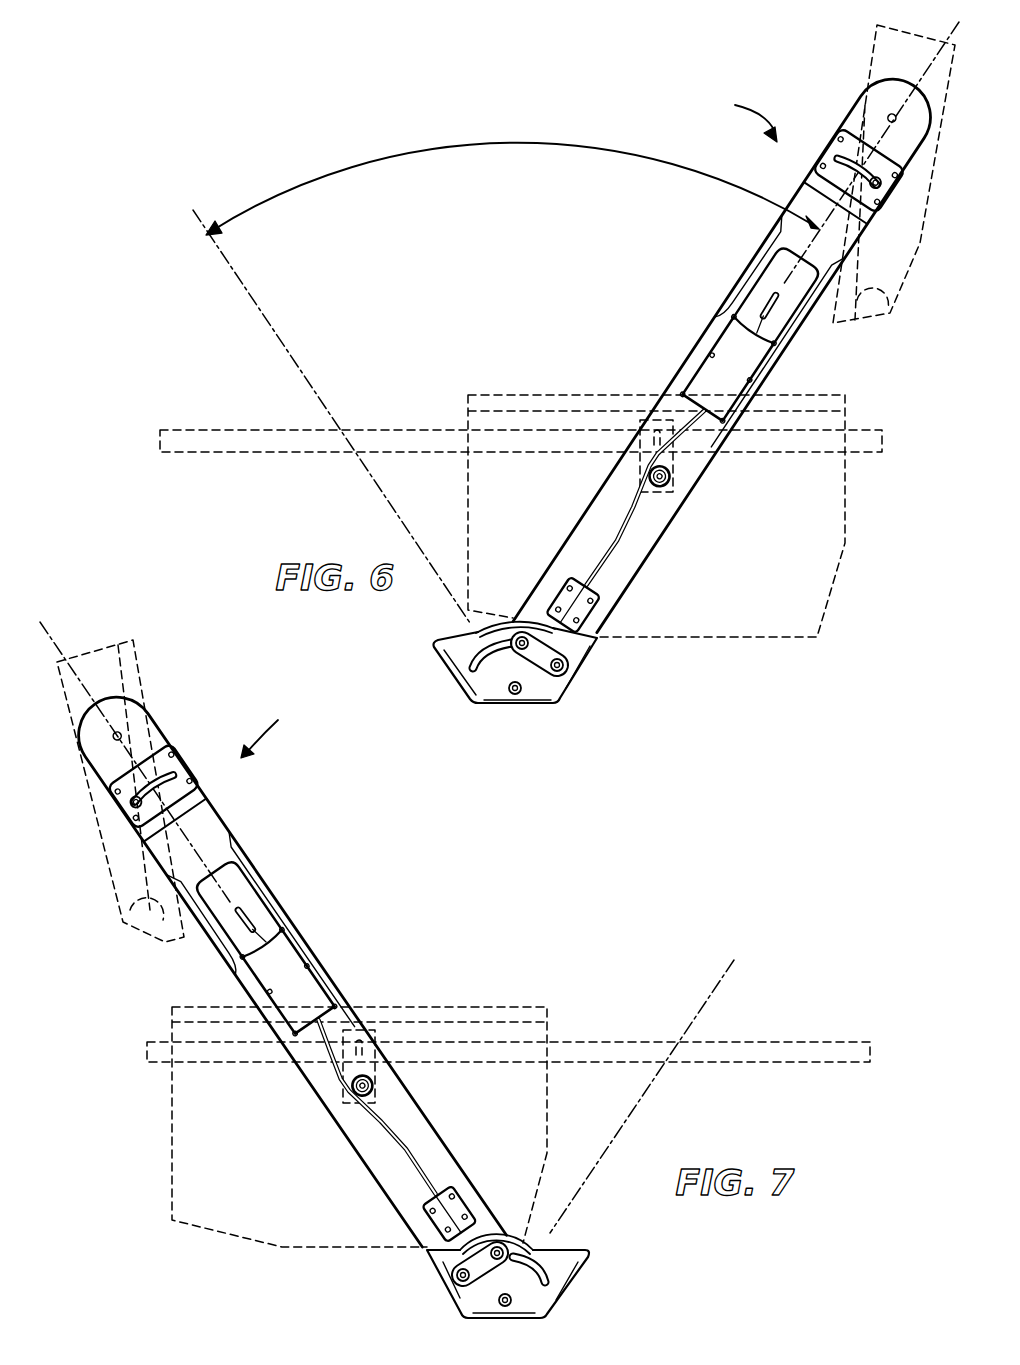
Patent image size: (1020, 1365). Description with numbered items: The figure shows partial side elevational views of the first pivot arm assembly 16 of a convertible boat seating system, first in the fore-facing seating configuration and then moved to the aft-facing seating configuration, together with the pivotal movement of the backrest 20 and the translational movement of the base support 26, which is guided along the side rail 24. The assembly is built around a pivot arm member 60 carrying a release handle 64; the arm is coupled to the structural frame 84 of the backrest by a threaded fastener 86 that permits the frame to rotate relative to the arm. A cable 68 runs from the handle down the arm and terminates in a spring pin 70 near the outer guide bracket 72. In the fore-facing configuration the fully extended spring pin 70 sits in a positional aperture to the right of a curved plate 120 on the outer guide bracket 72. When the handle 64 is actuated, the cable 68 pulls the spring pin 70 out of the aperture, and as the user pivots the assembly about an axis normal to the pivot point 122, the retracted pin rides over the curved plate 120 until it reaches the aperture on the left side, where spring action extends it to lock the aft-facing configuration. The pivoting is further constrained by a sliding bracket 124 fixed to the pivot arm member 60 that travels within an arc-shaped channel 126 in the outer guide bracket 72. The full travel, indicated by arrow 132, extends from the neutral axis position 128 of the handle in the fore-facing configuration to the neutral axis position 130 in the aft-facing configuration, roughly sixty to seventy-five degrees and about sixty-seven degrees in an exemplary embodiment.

In FIG. 6, the first pivot arm assembly 16 is at (740, 112).
In FIG. 7, the first pivot arm assembly 16 is at (274, 729).
In FIG. 6, the backrest 20 is at (920, 243).
In FIG. 7, the backrest 20 is at (98, 862).
In FIG. 6, the side rail 24 is at (248, 455).
In FIG. 7, the side rail 24 is at (790, 1064).
In FIG. 6, the base support 26 is at (848, 503).
In FIG. 7, the base support 26 is at (172, 1118).
In FIG. 6, the pivot arm member 60 is at (697, 347).
In FIG. 7, the pivot arm member 60 is at (331, 966).
In FIG. 6, the release handle 64 is at (774, 306).
In FIG. 7, the release handle 64 is at (250, 913).
In FIG. 6, the cable 68 is at (620, 540).
In FIG. 7, the cable 68 is at (390, 1148).
In FIG. 6, the spring pin 70 is at (555, 652).
In FIG. 7, the spring pin 70 is at (460, 1268).
In FIG. 6, the outer guide bracket 72 is at (456, 681).
In FIG. 7, the outer guide bracket 72 is at (578, 1270).
In FIG. 6, the structural frame 84 is at (888, 308).
In FIG. 7, the structural frame 84 is at (132, 930).
In FIG. 6, the threaded fastener 86 is at (892, 114).
In FIG. 7, the threaded fastener 86 is at (124, 735).
In FIG. 6, the curved plate 120 is at (487, 625).
In FIG. 7, the curved plate 120 is at (520, 1238).
In FIG. 6, the pivot point 122 is at (518, 696).
In FIG. 7, the pivot point 122 is at (510, 1299).
In FIG. 6, the sliding bracket 124 is at (568, 672).
In FIG. 7, the sliding bracket 124 is at (447, 1294).
In FIG. 6, the arc-shaped channel 126 is at (485, 700).
In FIG. 7, the arc-shaped channel 126 is at (548, 1253).
In FIG. 6, the neutral axis position 128 is at (932, 63).
In FIG. 7, the neutral axis position 128 is at (727, 992).
In FIG. 6, the neutral axis position 130 is at (260, 310).
In FIG. 7, the neutral axis position 130 is at (86, 681).
In FIG. 6, the arrow 132 is at (516, 140).